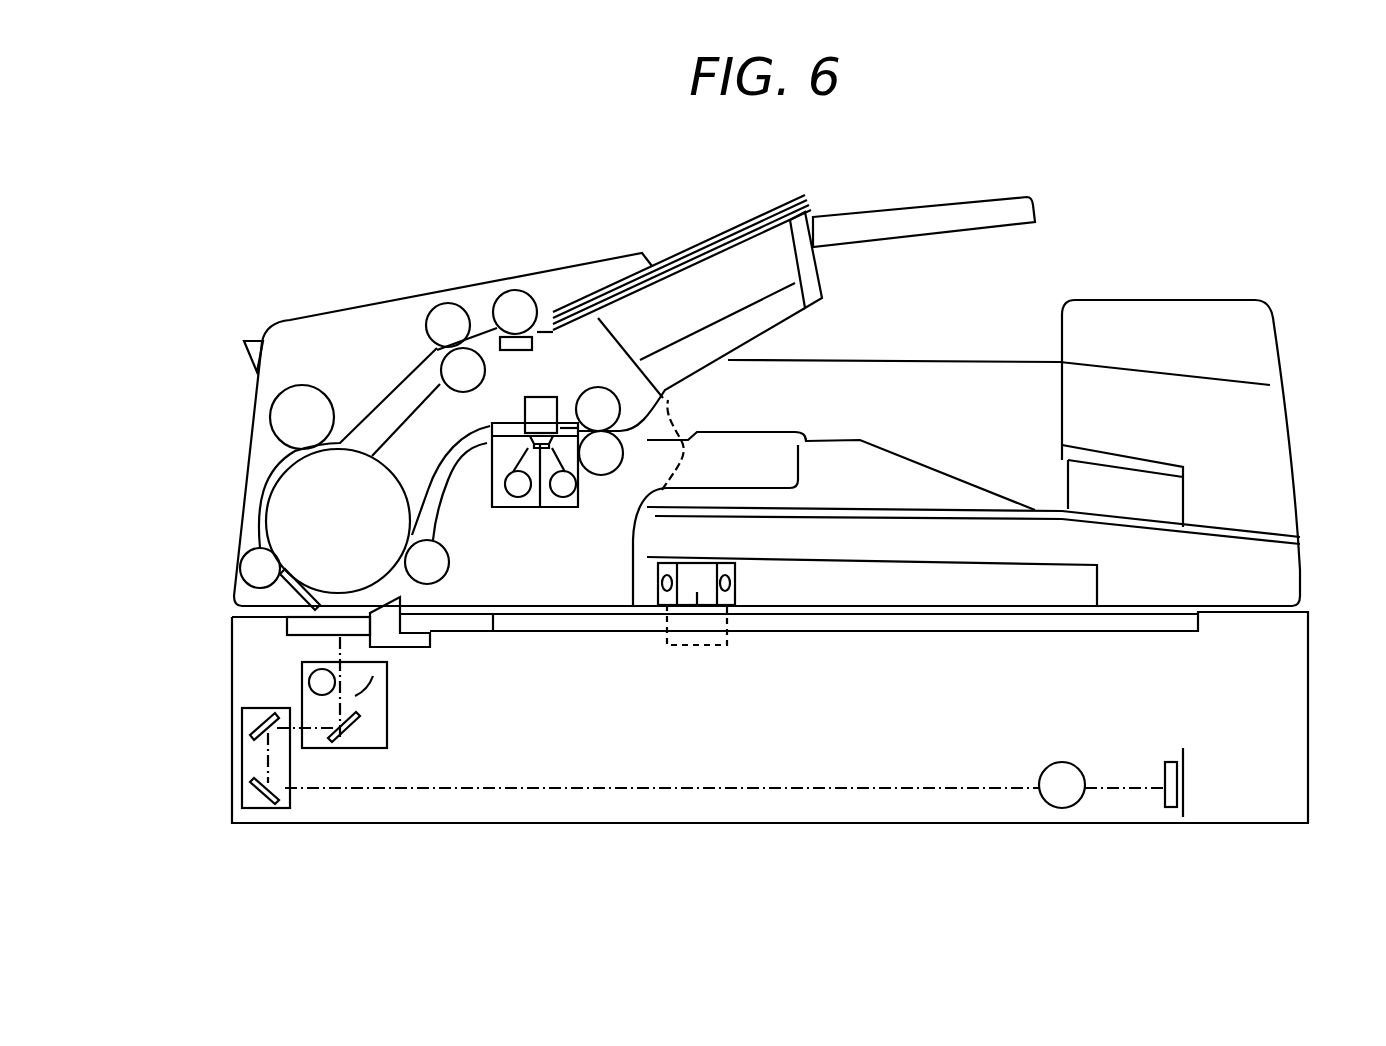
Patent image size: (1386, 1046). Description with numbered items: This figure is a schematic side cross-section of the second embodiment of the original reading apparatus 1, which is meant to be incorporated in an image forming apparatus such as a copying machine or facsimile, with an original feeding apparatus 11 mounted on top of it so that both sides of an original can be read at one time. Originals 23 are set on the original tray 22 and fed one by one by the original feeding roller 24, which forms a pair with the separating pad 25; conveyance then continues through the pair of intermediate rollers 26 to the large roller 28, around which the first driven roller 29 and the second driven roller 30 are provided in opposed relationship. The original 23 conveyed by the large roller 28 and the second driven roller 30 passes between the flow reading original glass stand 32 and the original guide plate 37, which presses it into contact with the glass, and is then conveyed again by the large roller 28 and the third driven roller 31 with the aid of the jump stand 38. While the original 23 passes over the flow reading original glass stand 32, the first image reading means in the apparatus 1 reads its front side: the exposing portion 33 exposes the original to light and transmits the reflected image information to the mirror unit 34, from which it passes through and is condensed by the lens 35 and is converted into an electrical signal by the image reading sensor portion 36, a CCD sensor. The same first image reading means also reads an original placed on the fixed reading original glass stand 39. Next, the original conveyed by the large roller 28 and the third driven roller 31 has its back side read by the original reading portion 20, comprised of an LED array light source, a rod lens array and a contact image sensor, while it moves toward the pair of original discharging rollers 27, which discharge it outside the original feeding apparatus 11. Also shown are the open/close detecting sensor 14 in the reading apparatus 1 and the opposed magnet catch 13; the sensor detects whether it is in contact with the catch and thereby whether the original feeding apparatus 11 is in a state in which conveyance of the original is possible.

The original reading apparatus 1 is at (1310, 684).
The original feeding apparatus 11 is at (1288, 403).
The magnet catch 13 is at (735, 583).
The open/close detecting sensor 14 is at (715, 646).
The original reading portion 20 is at (553, 393).
The original tray 22 is at (775, 243).
The original 23 is at (676, 242).
The original feeding roller 24 is at (515, 295).
The separating pad 25 is at (513, 350).
The pair of intermediate rollers 26 is at (447, 308).
The pair of original discharging rollers 27 is at (608, 458).
The large roller 28 is at (358, 468).
The first driven roller 29 is at (285, 421).
The second driven roller 30 is at (250, 574).
The third driven roller 31 is at (437, 562).
The flow reading original glass stand 32 is at (287, 635).
The exposing portion 33 is at (388, 718).
The mirror unit 34 is at (242, 758).
The lens 35 is at (1060, 763).
The image reading sensor portion 36 is at (1172, 762).
The original guide plate 37 is at (340, 613).
The jump stand 38 is at (423, 645).
The fixed reading original glass stand 39 is at (636, 628).